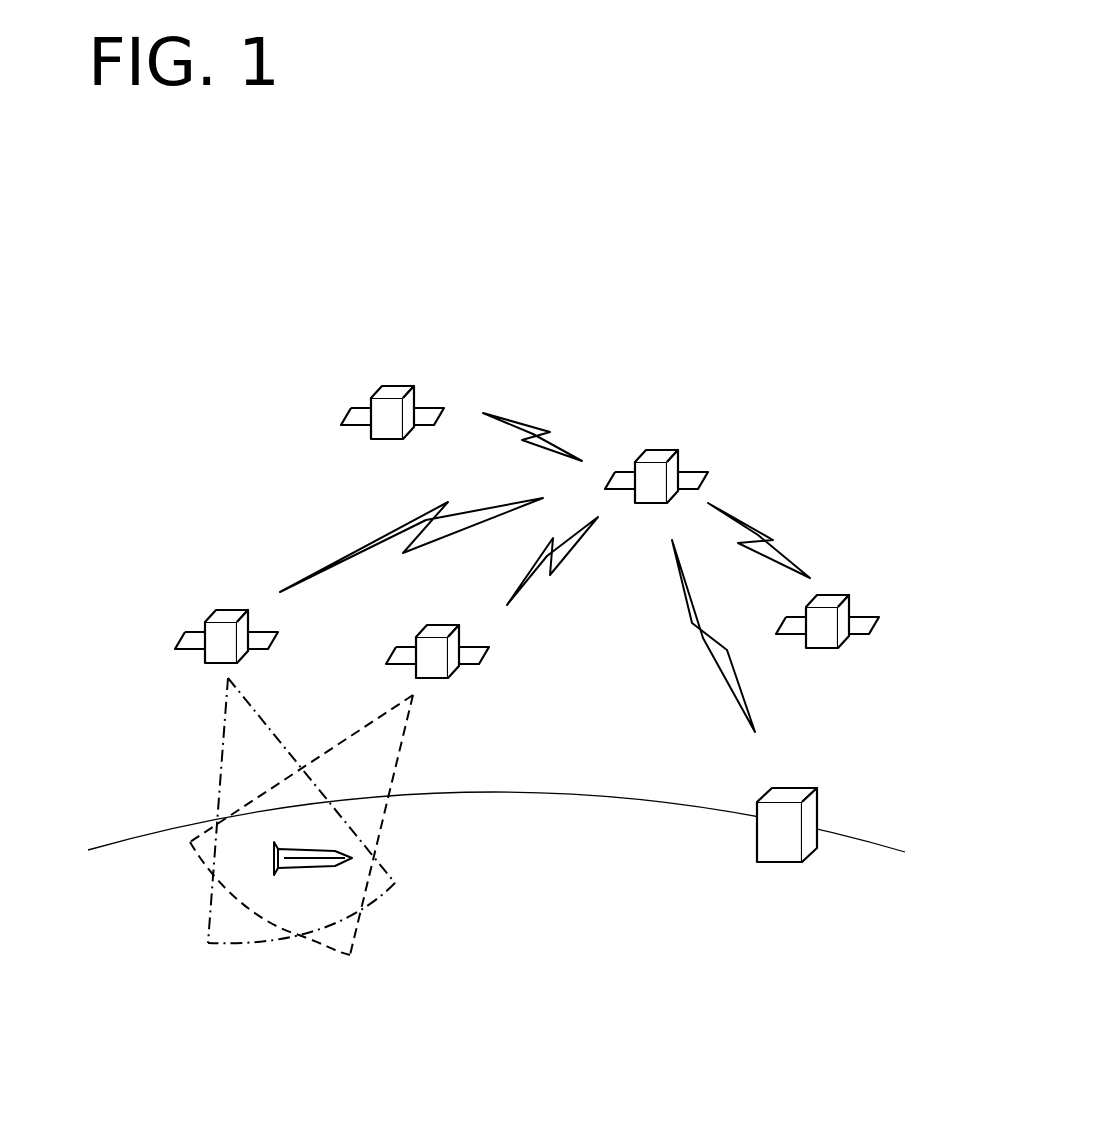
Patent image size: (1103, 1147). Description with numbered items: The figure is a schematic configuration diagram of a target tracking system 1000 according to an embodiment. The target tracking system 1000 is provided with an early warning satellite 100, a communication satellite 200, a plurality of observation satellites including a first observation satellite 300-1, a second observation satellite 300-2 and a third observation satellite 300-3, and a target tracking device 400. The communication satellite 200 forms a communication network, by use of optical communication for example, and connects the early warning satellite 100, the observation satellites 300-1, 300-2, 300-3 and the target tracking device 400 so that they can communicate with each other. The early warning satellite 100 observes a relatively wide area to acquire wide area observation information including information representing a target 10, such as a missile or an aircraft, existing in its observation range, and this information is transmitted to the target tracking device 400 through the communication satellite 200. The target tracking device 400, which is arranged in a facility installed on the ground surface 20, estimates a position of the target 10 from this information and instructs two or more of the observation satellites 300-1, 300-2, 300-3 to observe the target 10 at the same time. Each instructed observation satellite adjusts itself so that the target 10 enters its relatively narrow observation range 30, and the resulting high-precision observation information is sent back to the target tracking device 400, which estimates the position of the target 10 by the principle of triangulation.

The target tracking system 1000 is at (746, 349).
The early warning satellite 100 is at (350, 415).
The communication satellite 200 is at (657, 450).
The first observation satellite 300-1 is at (190, 637).
The second observation satellite 300-2 is at (478, 656).
The third observation satellite 300-3 is at (835, 600).
The target tracking device 400 is at (797, 792).
The observation range 30 is at (220, 768).
The ground surface 20 is at (587, 812).
The target 10 is at (272, 862).